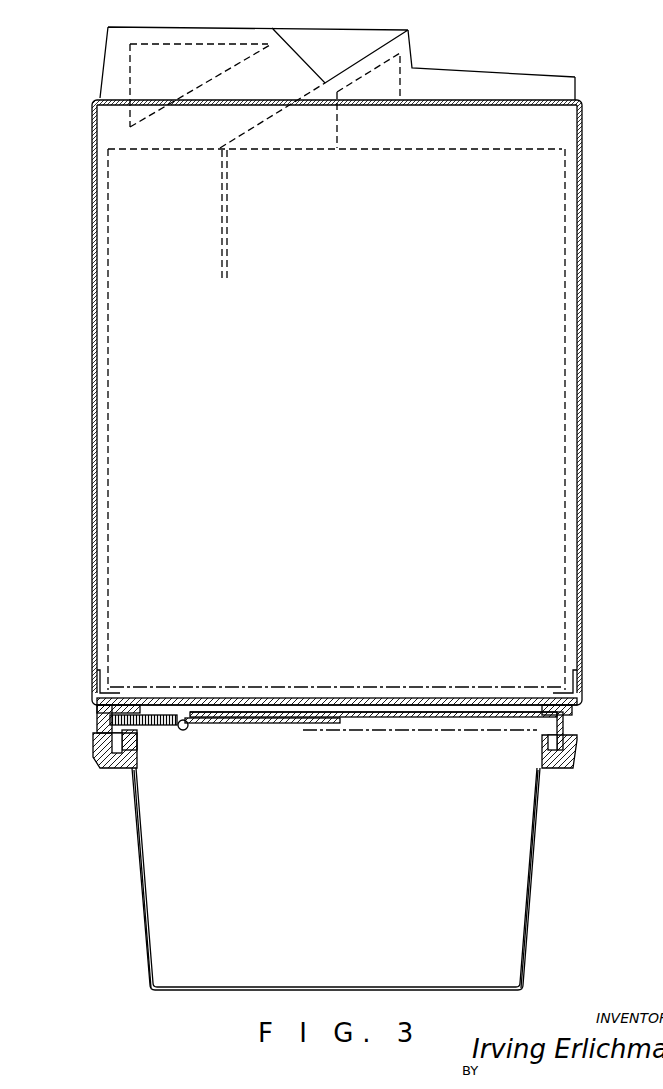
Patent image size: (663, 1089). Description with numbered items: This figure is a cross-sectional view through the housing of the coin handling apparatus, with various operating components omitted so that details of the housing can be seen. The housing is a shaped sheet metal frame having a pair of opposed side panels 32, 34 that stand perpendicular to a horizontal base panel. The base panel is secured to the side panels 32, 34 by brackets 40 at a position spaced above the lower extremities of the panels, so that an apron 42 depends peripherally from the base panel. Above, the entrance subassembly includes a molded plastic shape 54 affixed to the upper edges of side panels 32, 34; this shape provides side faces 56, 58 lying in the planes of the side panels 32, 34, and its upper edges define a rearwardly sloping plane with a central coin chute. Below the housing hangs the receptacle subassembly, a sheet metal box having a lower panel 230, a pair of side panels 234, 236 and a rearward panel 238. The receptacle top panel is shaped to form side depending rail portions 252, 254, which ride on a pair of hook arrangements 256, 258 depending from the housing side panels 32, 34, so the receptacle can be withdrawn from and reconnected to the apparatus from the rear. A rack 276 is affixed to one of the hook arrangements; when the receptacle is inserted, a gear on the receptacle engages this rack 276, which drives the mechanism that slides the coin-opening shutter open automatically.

The side face 58 is at (100, 78).
The molded plastic shape 54 is at (465, 62).
The side face 56 is at (575, 87).
The side panel 32 is at (92, 470).
The side panel 34 is at (582, 472).
The bracket 40 is at (103, 683).
The apron 42 is at (93, 715).
The side depending rail portion 252 is at (137, 737).
The side depending rail portion 254 is at (547, 740).
The hook arrangement 256 is at (100, 768).
The hook arrangement 258 is at (568, 767).
The rack 276 is at (570, 730).
The rearward panel 238 is at (375, 864).
The side panel 234 is at (142, 892).
The side panel 236 is at (532, 910).
The lower panel 230 is at (393, 988).